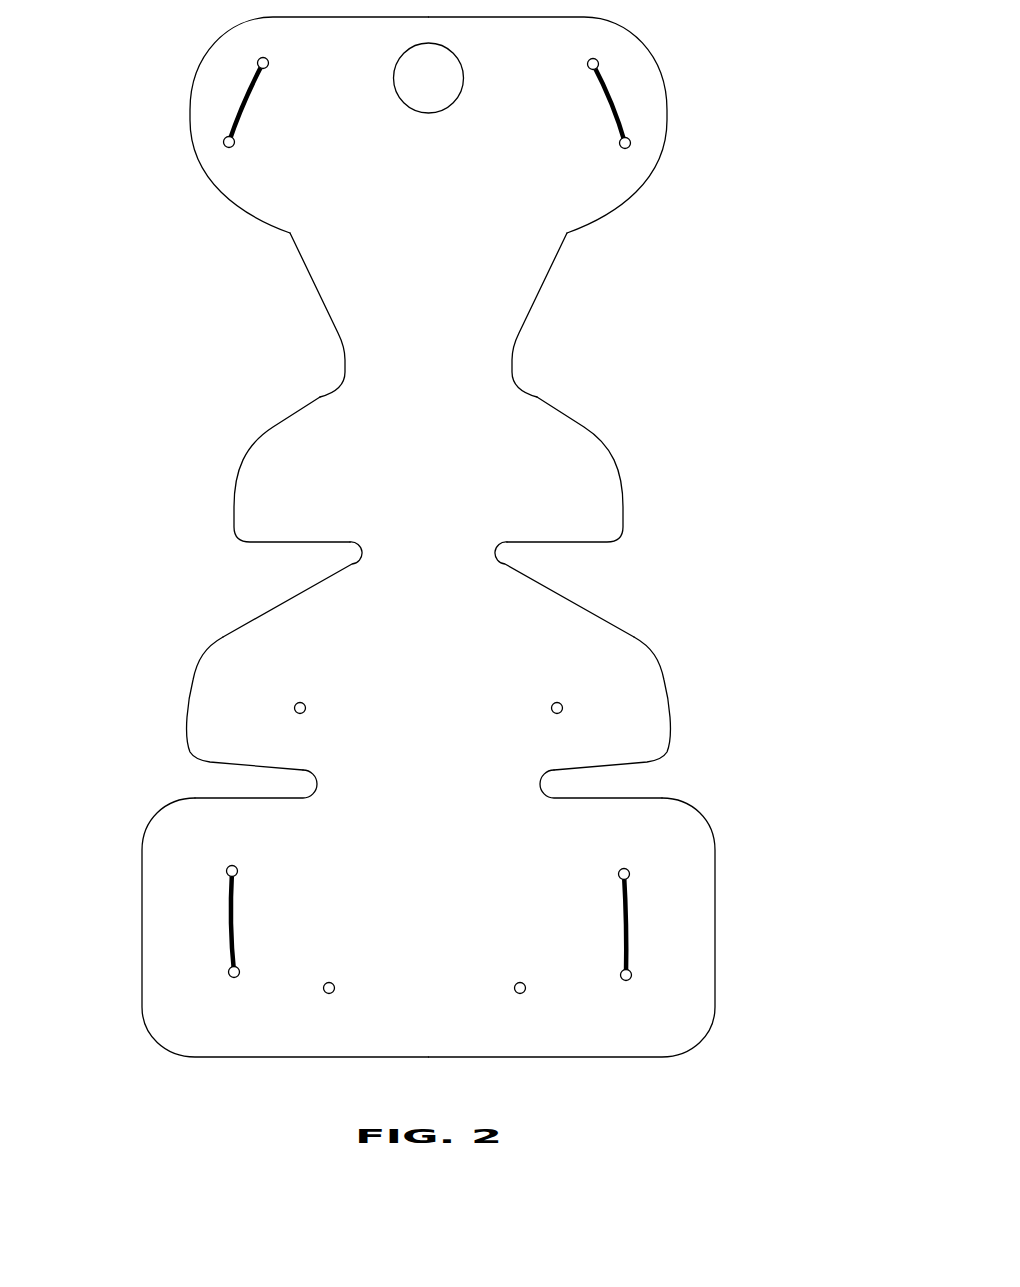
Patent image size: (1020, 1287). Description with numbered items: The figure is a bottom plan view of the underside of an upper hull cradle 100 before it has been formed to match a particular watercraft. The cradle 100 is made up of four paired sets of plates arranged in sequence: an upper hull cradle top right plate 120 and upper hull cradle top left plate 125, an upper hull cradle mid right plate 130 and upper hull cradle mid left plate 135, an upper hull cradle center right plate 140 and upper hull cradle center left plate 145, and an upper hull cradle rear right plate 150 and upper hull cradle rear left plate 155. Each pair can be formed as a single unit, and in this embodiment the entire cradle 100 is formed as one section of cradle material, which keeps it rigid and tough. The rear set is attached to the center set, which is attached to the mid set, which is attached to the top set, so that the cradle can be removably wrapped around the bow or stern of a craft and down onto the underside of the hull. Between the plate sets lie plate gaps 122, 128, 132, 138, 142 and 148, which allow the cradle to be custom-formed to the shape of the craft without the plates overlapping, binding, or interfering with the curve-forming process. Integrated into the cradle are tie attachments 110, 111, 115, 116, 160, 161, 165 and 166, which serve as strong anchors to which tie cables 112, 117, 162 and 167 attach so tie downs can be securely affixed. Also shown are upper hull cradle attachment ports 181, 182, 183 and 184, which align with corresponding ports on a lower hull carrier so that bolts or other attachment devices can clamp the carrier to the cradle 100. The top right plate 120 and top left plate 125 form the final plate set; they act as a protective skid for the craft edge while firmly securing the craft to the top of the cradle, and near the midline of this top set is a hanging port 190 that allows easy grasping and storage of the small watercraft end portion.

The upper hull cradle 100 is at (433, 565).
The tie attachment 110 is at (308, 127).
The tie attachment 111 is at (268, 66).
The tie cable 112 is at (246, 104).
The tie attachment 115 is at (550, 127).
The tie attachment 116 is at (589, 66).
The tie cable 117 is at (611, 104).
The upper hull cradle top right plate 120 is at (188, 130).
The plate gap 122 is at (228, 346).
The upper hull cradle top left plate 125 is at (669, 130).
The plate gap 128 is at (634, 333).
The upper hull cradle mid right plate 130 is at (237, 499).
The plate gap 132 is at (240, 565).
The upper hull cradle mid left plate 135 is at (622, 499).
The plate gap 138 is at (665, 563).
The upper hull cradle center right plate 140 is at (185, 708).
The plate gap 142 is at (194, 775).
The upper hull cradle center left plate 145 is at (672, 708).
The plate gap 148 is at (713, 772).
The upper hull cradle rear right plate 150 is at (157, 1035).
The upper hull cradle rear left plate 155 is at (700, 1036).
The tie attachment 160 is at (256, 899).
The tie attachment 161 is at (238, 868).
The tie cable 162 is at (237, 925).
The tie attachment 165 is at (605, 901).
The tie attachment 166 is at (616, 868).
The tie cable 167 is at (620, 925).
The upper hull cradle attachment port 181 is at (327, 996).
The upper hull cradle attachment port 182 is at (520, 995).
The upper hull cradle attachment port 183 is at (297, 701).
The upper hull cradle attachment port 184 is at (560, 701).
The hanging port 190 is at (410, 110).